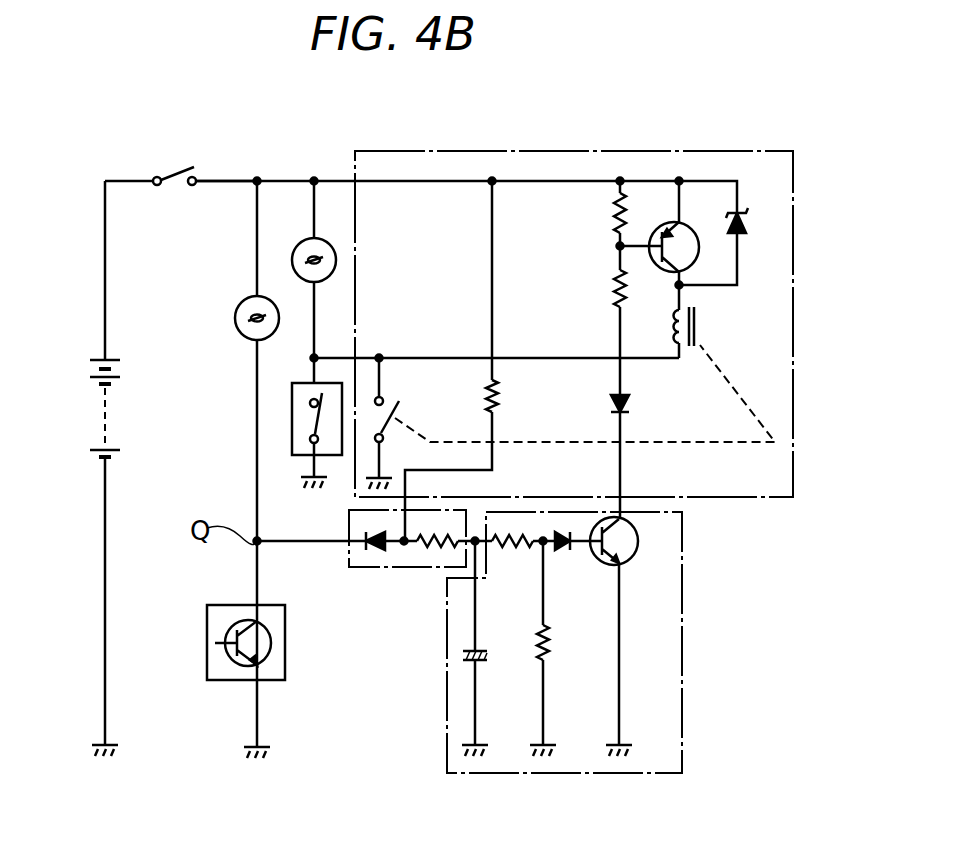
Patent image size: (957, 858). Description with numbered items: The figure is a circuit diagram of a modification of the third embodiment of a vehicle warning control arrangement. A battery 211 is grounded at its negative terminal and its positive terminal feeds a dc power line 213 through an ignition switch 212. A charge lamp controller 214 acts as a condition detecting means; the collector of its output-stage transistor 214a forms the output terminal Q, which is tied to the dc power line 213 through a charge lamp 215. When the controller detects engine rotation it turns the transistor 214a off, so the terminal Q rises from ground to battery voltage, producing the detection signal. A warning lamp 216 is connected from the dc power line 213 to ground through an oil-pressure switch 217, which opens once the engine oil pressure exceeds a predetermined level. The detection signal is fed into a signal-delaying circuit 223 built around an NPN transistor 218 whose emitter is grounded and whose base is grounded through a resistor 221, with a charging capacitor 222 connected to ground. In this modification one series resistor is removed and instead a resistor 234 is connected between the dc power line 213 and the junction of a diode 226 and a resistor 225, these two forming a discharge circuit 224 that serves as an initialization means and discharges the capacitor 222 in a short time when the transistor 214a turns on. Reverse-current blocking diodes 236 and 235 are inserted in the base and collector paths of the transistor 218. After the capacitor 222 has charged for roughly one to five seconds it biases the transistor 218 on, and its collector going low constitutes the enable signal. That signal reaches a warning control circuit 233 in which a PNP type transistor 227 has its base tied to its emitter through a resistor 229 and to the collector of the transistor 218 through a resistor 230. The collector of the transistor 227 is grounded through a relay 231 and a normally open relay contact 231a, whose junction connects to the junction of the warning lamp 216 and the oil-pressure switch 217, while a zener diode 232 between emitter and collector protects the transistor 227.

The battery 211 is at (105, 410).
The ignition switch 212 is at (172, 172).
The dc power line 213 is at (228, 181).
The charge lamp controller 214 is at (222, 682).
The transistor 214a is at (268, 660).
The charge lamp 215 is at (235, 325).
The warning lamp 216 is at (305, 240).
The oil-pressure switch 217 is at (292, 425).
The NPN transistor 218 is at (640, 535).
The resistor 221 is at (552, 640).
The charging capacitor 222 is at (490, 657).
The signal-delaying circuit 223 is at (683, 628).
The discharge circuit 224 is at (358, 570).
The resistor 225 is at (438, 552).
The diode 226 is at (378, 553).
The PNP type transistor 227 is at (690, 230).
The resistor 229 is at (612, 222).
The resistor 230 is at (612, 297).
The relay 231 is at (700, 327).
The relay contact 231a is at (398, 418).
The zener diode 232 is at (750, 220).
The warning control circuit 233 is at (519, 150).
The resistor 234 is at (498, 395).
The reverse-current blocking diode 235 is at (633, 405).
The reverse-current blocking diode 236 is at (565, 555).